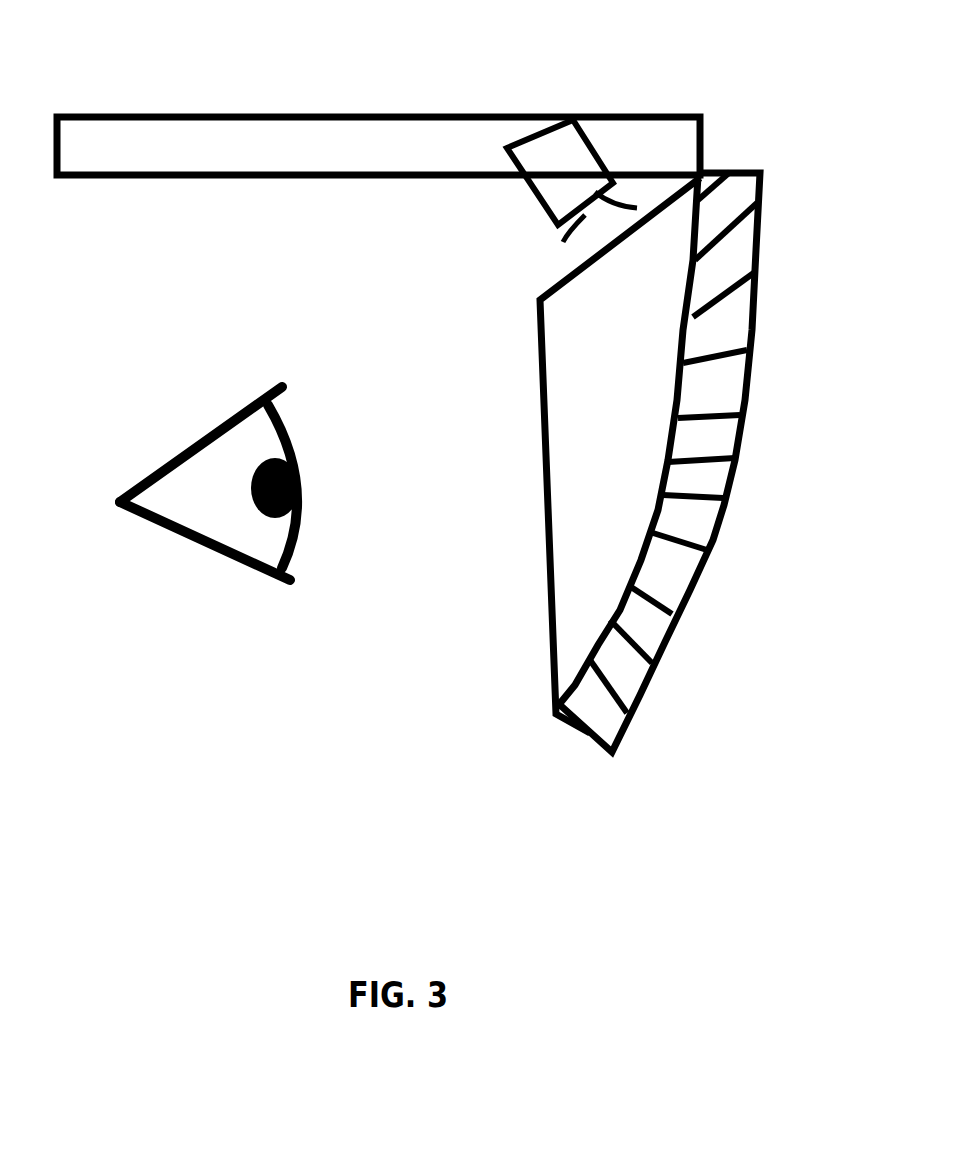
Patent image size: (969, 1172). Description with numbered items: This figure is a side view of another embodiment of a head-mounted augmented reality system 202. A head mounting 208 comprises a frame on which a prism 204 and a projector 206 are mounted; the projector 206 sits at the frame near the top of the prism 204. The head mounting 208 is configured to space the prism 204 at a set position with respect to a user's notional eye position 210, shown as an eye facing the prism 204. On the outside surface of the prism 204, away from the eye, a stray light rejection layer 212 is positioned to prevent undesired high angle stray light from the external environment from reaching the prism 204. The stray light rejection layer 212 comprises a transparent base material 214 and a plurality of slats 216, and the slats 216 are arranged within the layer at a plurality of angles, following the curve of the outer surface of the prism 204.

The head-mounted augmented reality system 202 is at (333, 123).
The prism 204 is at (593, 560).
The projector 206 is at (543, 178).
The head mounting 208 is at (135, 155).
The user's notional eye position 210 is at (223, 520).
The stray light rejection layer 212 is at (738, 238).
The transparent base material 214 is at (727, 382).
The slats 216 is at (697, 500).